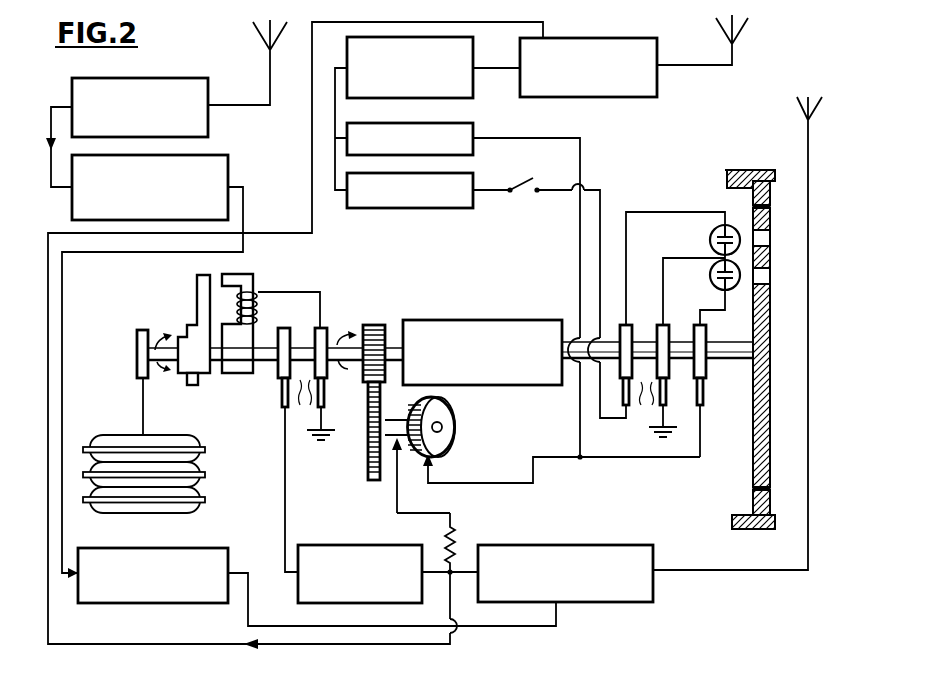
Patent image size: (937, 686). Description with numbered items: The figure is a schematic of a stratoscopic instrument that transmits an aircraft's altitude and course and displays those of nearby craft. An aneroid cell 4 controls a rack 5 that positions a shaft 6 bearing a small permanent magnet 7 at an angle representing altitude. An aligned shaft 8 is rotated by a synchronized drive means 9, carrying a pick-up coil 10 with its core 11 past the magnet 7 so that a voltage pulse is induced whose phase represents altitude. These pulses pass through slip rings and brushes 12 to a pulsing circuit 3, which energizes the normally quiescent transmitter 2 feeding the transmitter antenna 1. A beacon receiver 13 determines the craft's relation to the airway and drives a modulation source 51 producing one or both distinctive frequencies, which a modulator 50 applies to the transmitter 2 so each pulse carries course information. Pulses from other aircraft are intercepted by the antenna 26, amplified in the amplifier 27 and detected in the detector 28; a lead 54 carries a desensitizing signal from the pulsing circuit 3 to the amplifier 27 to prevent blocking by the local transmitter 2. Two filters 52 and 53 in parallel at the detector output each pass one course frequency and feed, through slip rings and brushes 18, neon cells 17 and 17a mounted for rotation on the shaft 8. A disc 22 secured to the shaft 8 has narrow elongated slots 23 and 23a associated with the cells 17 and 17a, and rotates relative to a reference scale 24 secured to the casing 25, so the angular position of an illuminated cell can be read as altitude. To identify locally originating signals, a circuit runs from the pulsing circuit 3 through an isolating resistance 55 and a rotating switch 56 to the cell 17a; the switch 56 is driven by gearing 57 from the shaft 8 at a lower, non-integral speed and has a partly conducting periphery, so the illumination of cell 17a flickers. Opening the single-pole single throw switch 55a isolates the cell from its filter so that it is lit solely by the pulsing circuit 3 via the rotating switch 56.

The transmitter antenna 1 is at (737, 333).
The transmitter 2 is at (565, 586).
The pulsing circuit 3 is at (360, 562).
The aneroid cell 4 is at (155, 468).
The rack 5 is at (123, 382).
The shaft 6 is at (275, 371).
The permanent magnet 7 is at (183, 328).
The shaft 8 is at (657, 367).
The drive means 9 is at (482, 338).
The pick-up coil 10 is at (263, 308).
The core 11 is at (250, 314).
The slip rings and brushes 12 is at (302, 378).
The beacon receiver 13 is at (150, 94).
The neon cell 17 is at (707, 235).
The neon cell 17a is at (706, 275).
The slip rings and brushes 18 is at (663, 375).
The disc 22 is at (775, 347).
The slot 23 is at (775, 238).
The slot 23a is at (778, 275).
The reference scale 24 is at (776, 348).
The casing 25 is at (756, 346).
The antenna 26 is at (715, 40).
The amplifier 27 is at (614, 68).
The detector 28 is at (431, 63).
The modulator 50 is at (153, 589).
The modulation source 51 is at (167, 187).
The filter 52 is at (431, 134).
The filter 53 is at (410, 207).
The lead 54 is at (249, 658).
The isolating resistance 55 is at (472, 542).
The single-pole single throw switch 55a is at (542, 173).
The rotating switch 56 is at (437, 427).
The gearing 57 is at (361, 402).